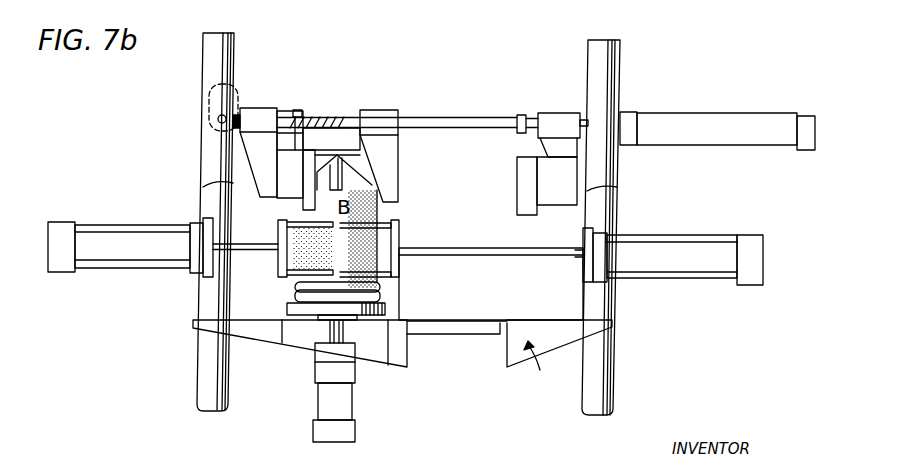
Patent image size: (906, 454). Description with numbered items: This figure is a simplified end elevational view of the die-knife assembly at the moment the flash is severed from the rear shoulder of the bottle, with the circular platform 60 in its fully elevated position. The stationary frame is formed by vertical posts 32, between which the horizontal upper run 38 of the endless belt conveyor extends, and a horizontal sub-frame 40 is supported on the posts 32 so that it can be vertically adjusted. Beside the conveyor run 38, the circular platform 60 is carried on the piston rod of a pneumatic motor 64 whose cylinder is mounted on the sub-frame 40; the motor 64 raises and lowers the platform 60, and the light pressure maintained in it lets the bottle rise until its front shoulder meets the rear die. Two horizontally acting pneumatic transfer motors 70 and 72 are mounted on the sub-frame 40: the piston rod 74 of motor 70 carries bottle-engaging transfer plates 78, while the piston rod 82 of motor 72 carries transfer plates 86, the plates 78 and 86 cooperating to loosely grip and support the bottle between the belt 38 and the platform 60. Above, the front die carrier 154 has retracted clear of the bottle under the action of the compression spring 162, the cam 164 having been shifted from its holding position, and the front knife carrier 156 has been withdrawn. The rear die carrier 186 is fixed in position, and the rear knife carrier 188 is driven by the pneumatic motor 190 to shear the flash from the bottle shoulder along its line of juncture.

The vertical post 32 is at (212, 111).
The cam 164 is at (215, 90).
The front die carrier 154 is at (264, 110).
The rear die carrier 186 is at (297, 111).
The compression spring 162 is at (333, 121).
The rear knife carrier 188 is at (379, 111).
The front knife carrier 156 is at (553, 118).
The pneumatic motor 190 is at (709, 122).
The pneumatic transfer motor 72 is at (128, 232).
The piston rod 82 is at (255, 247).
The transfer plates 86 is at (328, 240).
The bottle engaging transfer plates 78 is at (358, 248).
The piston rod 74 is at (507, 252).
The pneumatic transfer motor 70 is at (696, 276).
The circular platform 60 is at (287, 307).
The upper run of endless belt conveyor 38 is at (450, 327).
The sub-frame 40 is at (545, 366).
The pneumatic motor 64 is at (343, 402).